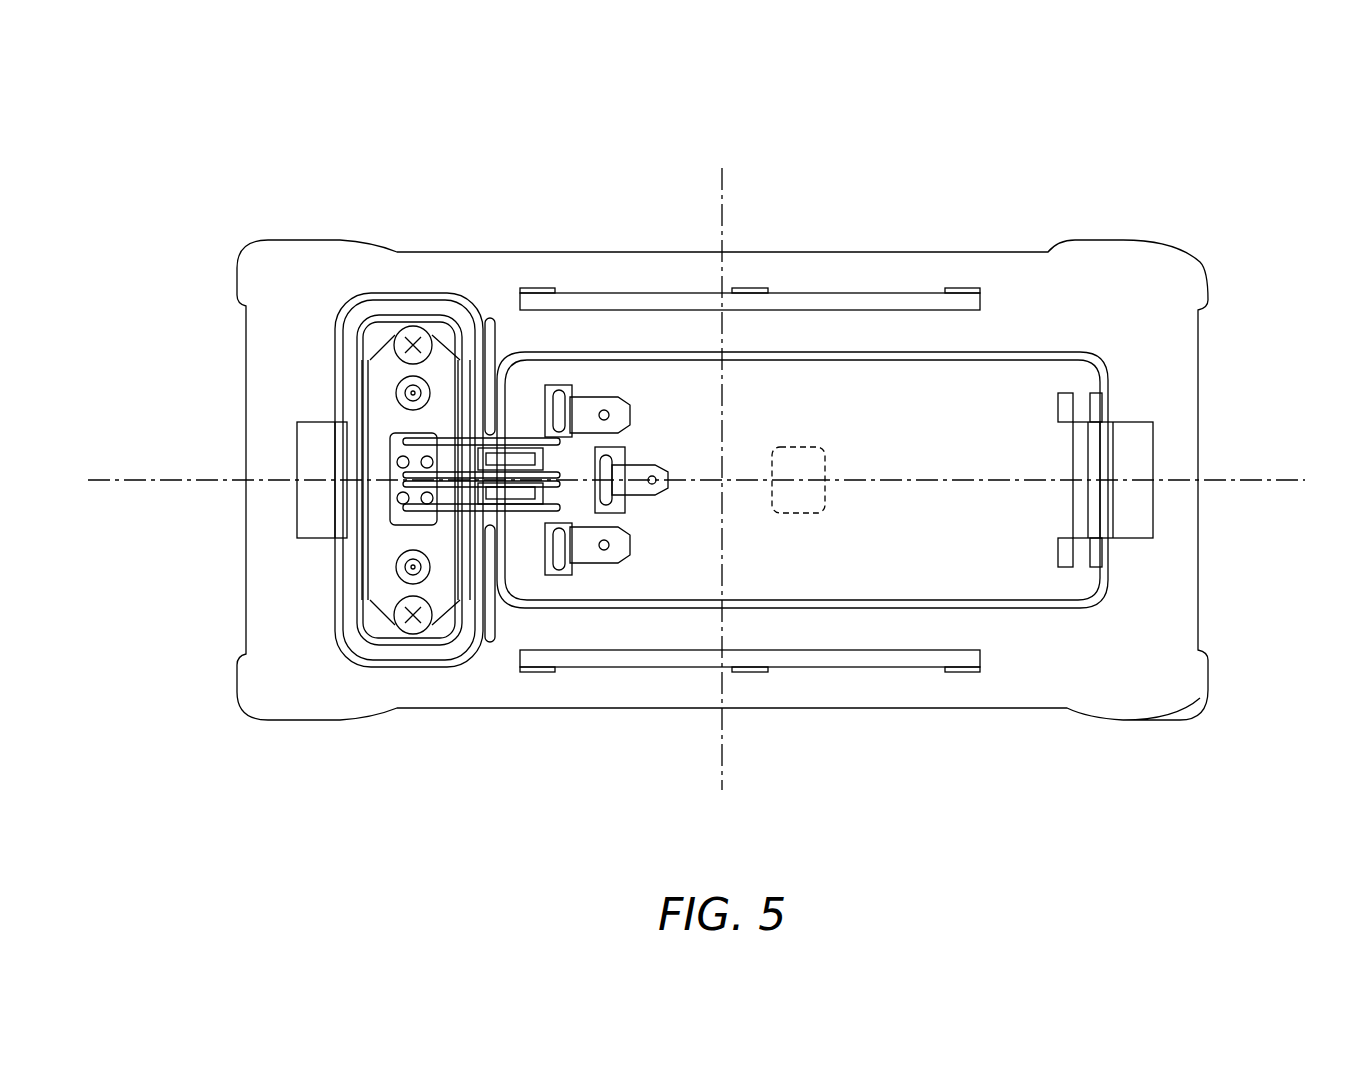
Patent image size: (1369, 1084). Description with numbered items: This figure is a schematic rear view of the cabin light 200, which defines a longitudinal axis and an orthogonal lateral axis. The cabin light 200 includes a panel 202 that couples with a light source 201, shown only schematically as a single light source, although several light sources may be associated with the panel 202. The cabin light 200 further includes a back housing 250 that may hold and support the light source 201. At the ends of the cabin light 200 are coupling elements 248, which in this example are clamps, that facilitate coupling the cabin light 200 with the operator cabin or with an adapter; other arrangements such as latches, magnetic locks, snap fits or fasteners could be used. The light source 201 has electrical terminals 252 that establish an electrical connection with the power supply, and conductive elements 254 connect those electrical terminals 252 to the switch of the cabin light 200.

The cabin light 200 is at (1145, 158).
The panel 202 is at (1180, 240).
The light source 201 is at (795, 513).
The coupling elements 248 is at (1140, 445).
The back housing 250 is at (1010, 572).
The electrical terminals 252 is at (581, 410).
The conductive elements 254 is at (533, 430).